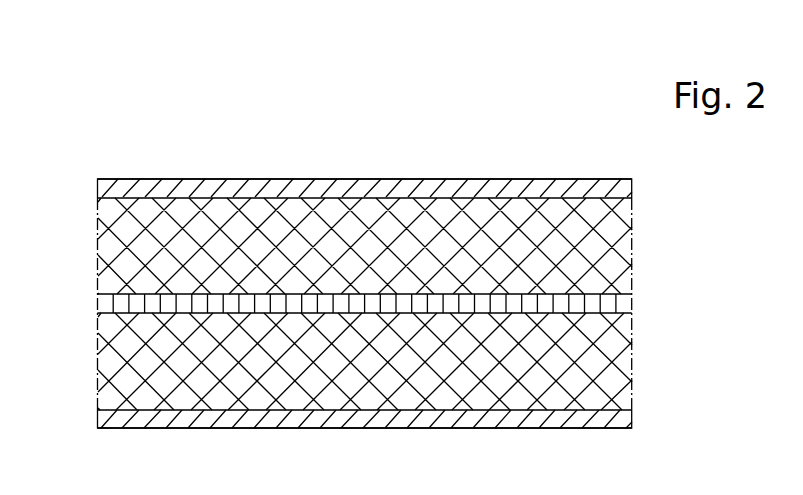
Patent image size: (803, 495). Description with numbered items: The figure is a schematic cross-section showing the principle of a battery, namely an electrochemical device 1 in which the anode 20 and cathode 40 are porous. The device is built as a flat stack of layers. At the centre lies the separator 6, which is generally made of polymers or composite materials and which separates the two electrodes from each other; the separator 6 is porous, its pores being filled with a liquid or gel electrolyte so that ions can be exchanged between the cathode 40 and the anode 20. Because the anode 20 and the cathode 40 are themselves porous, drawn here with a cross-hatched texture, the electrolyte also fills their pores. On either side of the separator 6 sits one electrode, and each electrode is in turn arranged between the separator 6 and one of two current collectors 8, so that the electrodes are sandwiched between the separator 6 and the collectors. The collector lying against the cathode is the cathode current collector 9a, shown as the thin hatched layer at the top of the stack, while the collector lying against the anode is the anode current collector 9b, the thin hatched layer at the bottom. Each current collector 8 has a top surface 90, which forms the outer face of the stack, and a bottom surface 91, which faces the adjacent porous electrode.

The electrochemical device 1 is at (104, 59).
The current collector 8 is at (257, 168).
The cathode current collector 9a is at (105, 185).
The anode current collector 9b is at (108, 416).
The anode 20 is at (143, 240).
The cathode 40 is at (145, 368).
The separator 6 is at (112, 307).
The top surface 90 is at (605, 179).
The bottom surface 91 is at (605, 198).